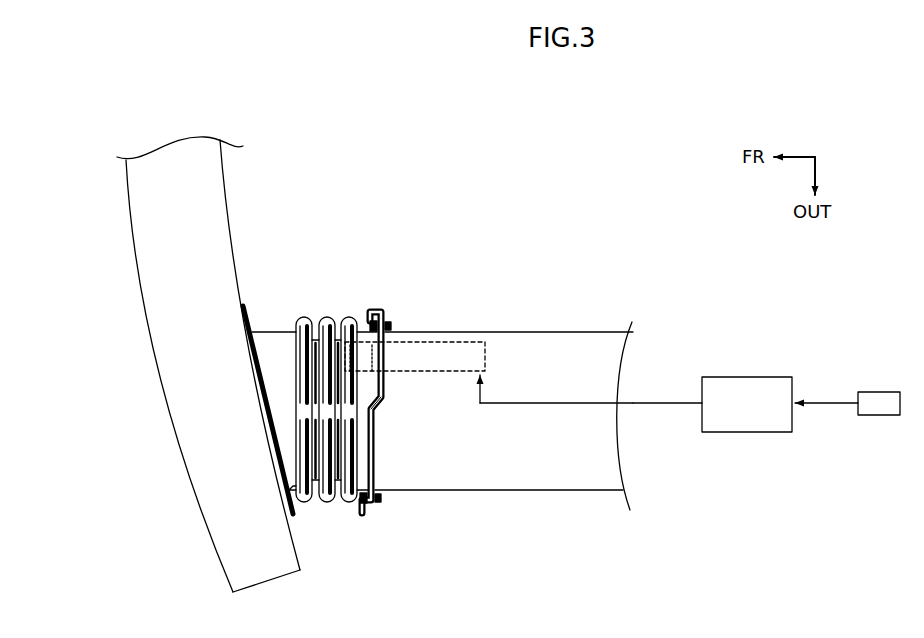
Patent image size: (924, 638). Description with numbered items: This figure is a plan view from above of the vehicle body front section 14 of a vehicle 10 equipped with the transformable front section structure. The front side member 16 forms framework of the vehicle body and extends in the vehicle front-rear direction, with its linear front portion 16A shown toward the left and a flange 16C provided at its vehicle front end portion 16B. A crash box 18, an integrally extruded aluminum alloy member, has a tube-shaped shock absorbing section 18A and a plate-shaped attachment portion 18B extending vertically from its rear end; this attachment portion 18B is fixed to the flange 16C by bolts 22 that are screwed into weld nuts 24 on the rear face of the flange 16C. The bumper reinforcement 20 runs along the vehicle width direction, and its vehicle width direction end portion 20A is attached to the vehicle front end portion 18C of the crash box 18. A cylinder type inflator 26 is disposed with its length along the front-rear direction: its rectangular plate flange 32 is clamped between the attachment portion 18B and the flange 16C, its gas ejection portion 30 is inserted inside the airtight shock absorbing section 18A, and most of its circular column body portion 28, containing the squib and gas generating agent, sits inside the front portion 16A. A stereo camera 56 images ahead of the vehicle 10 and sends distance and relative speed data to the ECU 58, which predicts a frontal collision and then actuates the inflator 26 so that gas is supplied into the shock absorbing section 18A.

The vehicle 10 is at (163, 547).
The vehicle body front section 14 is at (502, 203).
The front side member 16 is at (514, 380).
The front portion 16A is at (527, 340).
The vehicle front end portion 16B is at (380, 472).
The flange 16C is at (384, 318).
The crash box 18 is at (330, 399).
The shock absorbing section 18A is at (326, 317).
The attachment portion 18B is at (370, 513).
The vehicle front end portion 18C is at (254, 373).
The bumper reinforcement 20 is at (176, 386).
The vehicle width direction end portion 20A is at (263, 573).
The bolts 22 is at (371, 325).
The weld nuts 24 is at (389, 327).
The inflator 26 is at (468, 374).
The body portion 28 is at (470, 356).
The gas ejection portion 30 is at (368, 366).
The flange 32 is at (382, 406).
The stereo camera 56 is at (880, 392).
The ECU 58 is at (750, 377).